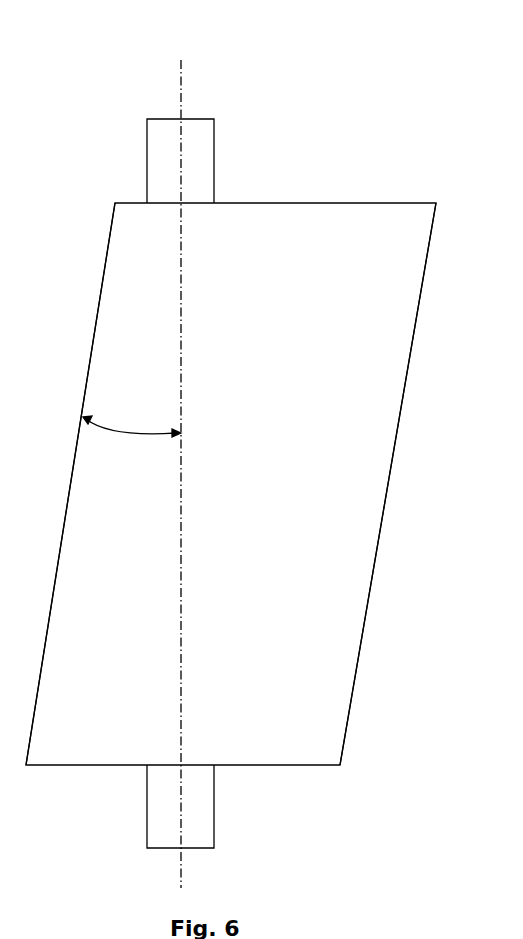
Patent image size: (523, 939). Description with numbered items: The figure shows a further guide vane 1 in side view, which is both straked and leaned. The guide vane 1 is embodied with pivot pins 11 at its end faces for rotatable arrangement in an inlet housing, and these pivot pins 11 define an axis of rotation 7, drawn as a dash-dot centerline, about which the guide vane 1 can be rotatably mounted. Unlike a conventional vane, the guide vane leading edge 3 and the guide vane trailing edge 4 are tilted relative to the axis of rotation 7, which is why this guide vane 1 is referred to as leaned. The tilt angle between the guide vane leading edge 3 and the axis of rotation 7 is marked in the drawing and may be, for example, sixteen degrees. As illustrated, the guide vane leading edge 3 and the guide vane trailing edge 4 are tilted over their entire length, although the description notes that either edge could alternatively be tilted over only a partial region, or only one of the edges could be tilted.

The guide vane 1 is at (132, 67).
The guide vane leading edge 3 is at (103, 287).
The guide vane trailing edge 4 is at (420, 303).
The axis of rotation 7 is at (182, 357).
The pivot pins 11 is at (211, 163).